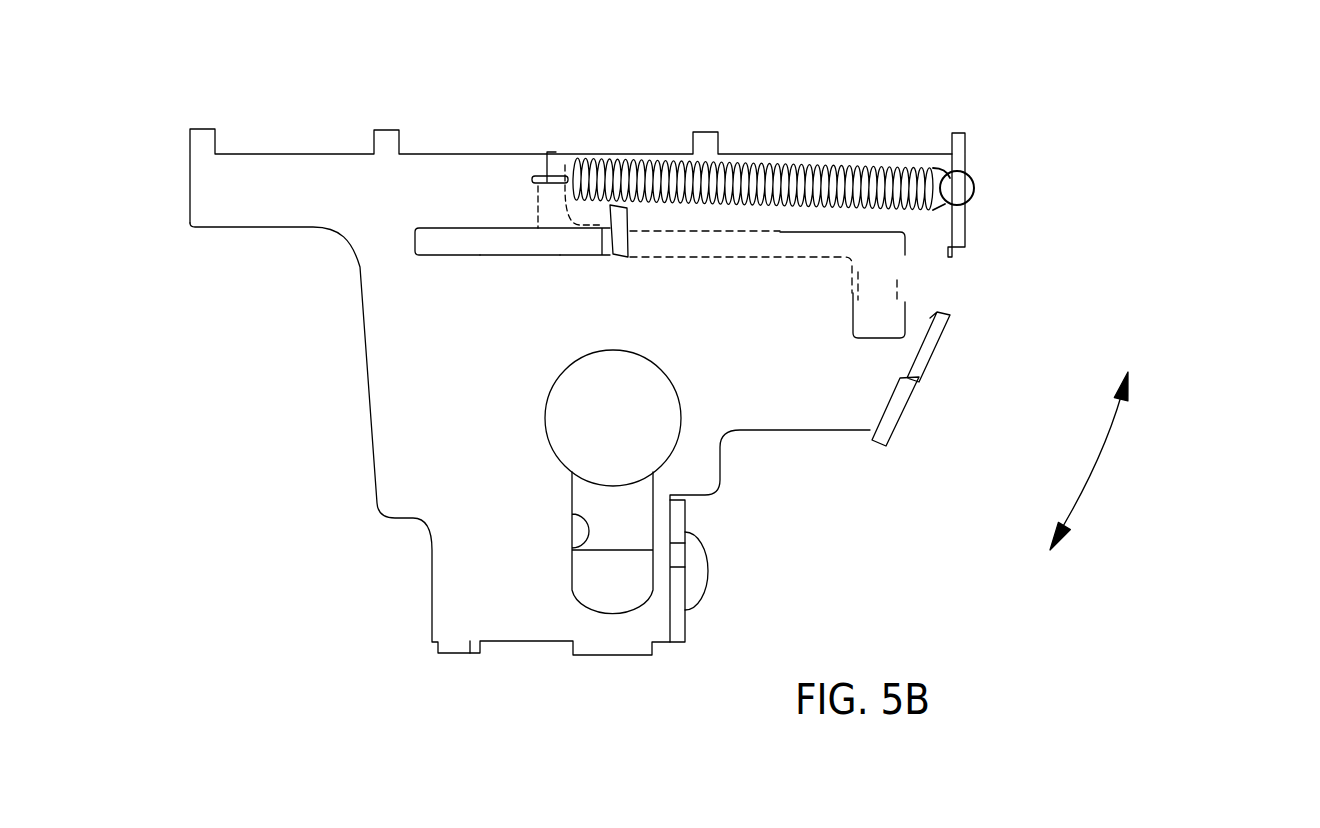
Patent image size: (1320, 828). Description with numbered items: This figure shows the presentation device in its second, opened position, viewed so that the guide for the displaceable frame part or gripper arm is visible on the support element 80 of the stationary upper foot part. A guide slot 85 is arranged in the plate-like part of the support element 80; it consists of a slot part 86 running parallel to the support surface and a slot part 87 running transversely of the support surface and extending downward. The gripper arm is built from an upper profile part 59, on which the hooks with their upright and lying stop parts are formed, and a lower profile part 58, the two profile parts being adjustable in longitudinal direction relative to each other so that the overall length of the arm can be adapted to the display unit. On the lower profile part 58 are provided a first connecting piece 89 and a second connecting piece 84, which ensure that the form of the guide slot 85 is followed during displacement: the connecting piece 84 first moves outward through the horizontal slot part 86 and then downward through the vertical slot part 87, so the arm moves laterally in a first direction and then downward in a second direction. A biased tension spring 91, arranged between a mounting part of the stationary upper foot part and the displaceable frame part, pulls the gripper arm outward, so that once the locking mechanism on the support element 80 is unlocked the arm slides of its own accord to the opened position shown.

The lower profile part 58 is at (1085, 325).
The upper profile part 59 is at (950, 278).
The support element 80 is at (222, 195).
The second connecting piece 84 is at (850, 303).
The guide slot 85 is at (498, 272).
The slot part parallel to support surface 86 is at (460, 240).
The slot part transverse to support surface 87 is at (873, 328).
The first connecting piece 89 is at (618, 243).
The spring 91 is at (780, 183).